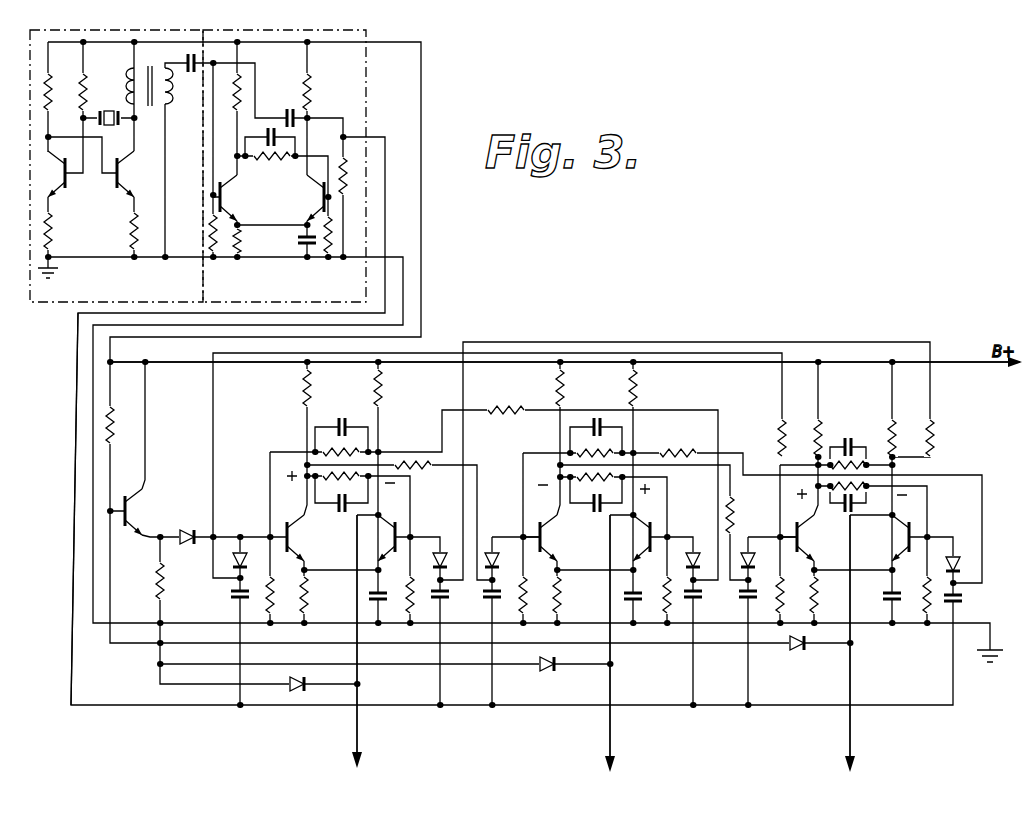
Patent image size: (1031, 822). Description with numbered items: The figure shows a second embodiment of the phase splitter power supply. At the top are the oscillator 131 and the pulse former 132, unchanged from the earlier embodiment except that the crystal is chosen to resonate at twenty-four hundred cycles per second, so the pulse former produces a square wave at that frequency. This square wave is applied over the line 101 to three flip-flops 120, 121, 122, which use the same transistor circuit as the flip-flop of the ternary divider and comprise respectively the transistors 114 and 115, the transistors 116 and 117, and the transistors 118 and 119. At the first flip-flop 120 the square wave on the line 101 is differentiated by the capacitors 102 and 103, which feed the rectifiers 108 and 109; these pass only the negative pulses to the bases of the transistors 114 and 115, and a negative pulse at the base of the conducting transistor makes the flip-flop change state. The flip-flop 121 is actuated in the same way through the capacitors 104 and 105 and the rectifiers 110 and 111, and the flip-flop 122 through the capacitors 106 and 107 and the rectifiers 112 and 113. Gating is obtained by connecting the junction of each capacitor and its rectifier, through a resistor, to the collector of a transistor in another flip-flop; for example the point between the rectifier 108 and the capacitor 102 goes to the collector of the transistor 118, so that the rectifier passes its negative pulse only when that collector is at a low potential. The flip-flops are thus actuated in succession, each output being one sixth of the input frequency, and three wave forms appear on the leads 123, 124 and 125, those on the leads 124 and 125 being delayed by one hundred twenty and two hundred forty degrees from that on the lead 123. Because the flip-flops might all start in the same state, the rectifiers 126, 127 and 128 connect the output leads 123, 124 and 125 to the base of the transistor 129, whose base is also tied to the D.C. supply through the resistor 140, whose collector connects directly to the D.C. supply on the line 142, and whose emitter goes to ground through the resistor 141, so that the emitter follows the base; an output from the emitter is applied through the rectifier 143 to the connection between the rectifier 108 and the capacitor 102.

The line 101 is at (71, 602).
The capacitor 102 is at (232, 600).
The capacitor 103 is at (442, 603).
The capacitor 104 is at (486, 592).
The capacitor 105 is at (696, 603).
The capacitor 106 is at (742, 592).
The capacitor 107 is at (958, 601).
The rectifier 108 is at (240, 552).
The rectifier 109 is at (443, 553).
The rectifier 110 is at (494, 553).
The rectifier 111 is at (697, 553).
The rectifier 112 is at (749, 553).
The rectifier 113 is at (956, 556).
The transistor 114 is at (291, 536).
The transistor 115 is at (390, 537).
The transistor 116 is at (545, 537).
The transistor 117 is at (645, 539).
The transistor 118 is at (801, 537).
The transistor 119 is at (905, 540).
The flip-flop 120 is at (338, 553).
The flip-flop 121 is at (593, 551).
The flip-flop 122 is at (837, 553).
The output lead 123 is at (358, 725).
The output lead 124 is at (612, 725).
The output lead 125 is at (852, 727).
The rectifier 126 is at (290, 692).
The rectifier 127 is at (548, 670).
The rectifier 128 is at (800, 650).
The transistor 129 is at (128, 505).
The oscillator 131 is at (134, 31).
The pulse former 132 is at (266, 31).
The resistor 140 is at (112, 441).
The resistor 141 is at (164, 577).
The line 142 is at (698, 365).
The rectifier 143 is at (186, 532).